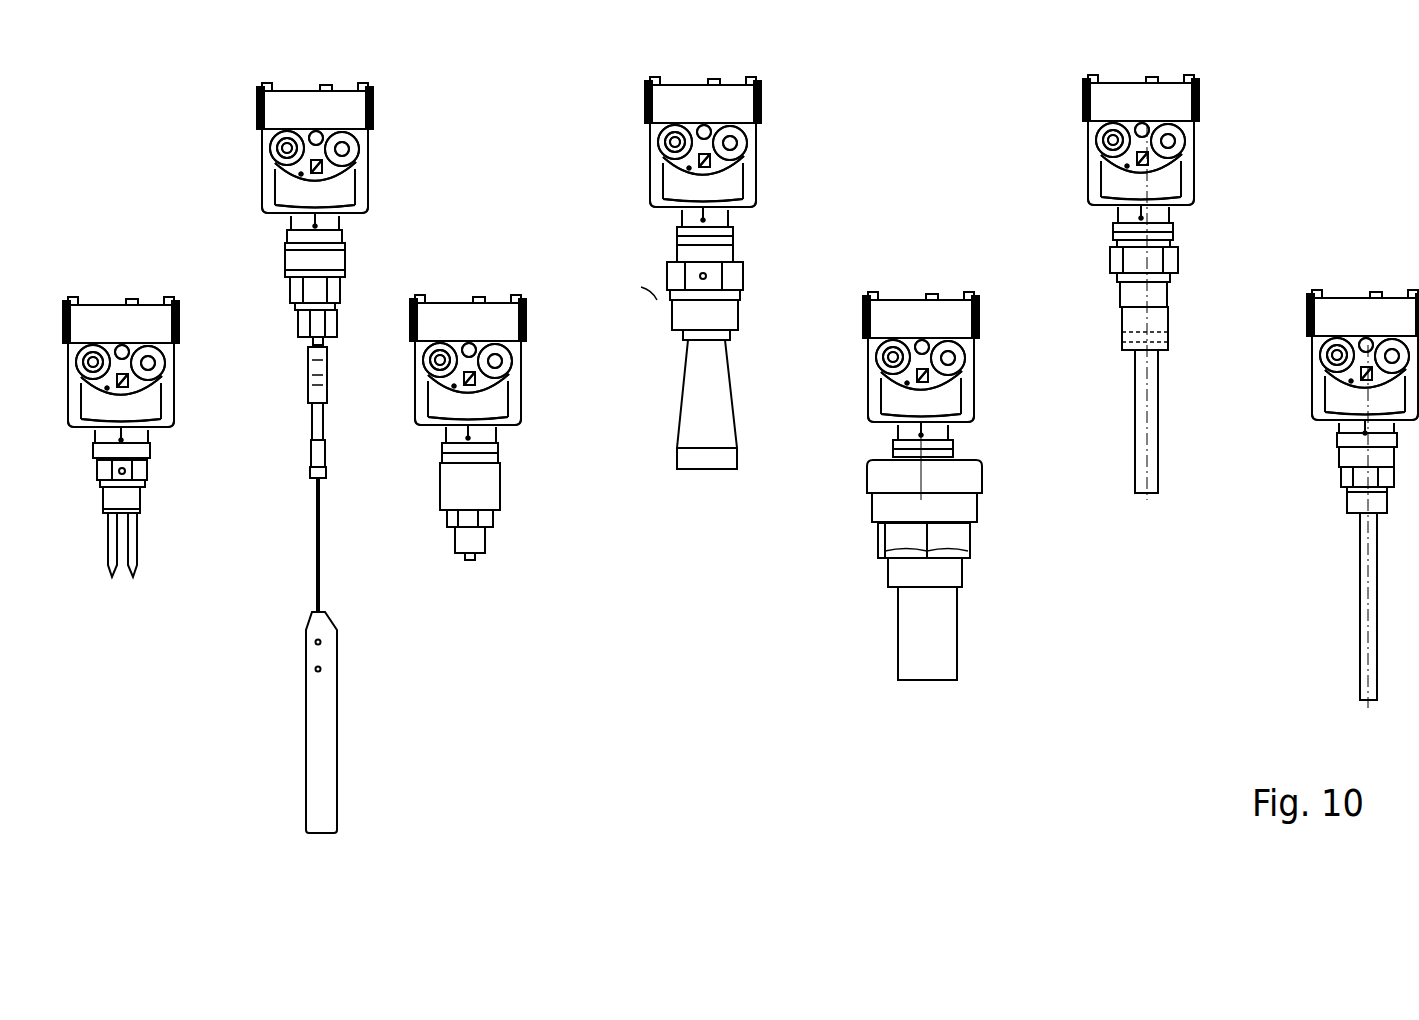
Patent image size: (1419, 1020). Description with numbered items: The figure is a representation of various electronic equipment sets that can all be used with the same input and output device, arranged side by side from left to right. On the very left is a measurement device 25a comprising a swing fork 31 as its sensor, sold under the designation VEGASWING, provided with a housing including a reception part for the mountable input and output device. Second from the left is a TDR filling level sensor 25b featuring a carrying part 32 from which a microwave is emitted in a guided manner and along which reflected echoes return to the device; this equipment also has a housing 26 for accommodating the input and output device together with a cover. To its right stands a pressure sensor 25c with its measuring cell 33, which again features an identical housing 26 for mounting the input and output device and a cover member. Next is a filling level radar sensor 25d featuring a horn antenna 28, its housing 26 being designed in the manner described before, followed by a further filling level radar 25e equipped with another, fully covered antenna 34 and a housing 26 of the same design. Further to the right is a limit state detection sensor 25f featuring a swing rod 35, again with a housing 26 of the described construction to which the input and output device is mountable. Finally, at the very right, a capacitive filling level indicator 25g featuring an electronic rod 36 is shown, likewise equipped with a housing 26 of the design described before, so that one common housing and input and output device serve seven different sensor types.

The field device with vibration limit switch 25a is at (183, 357).
The TDR filling level sensor 25b is at (378, 167).
The pressure sensor 25c is at (530, 370).
The filling level radar sensor 25d is at (763, 153).
The filling level radar 25e is at (920, 297).
The limit state detection sensor 25f is at (1203, 135).
The capacitive filling level indicator 25g is at (1362, 288).
The housing 26 is at (165, 398).
The horn antenna 28 is at (715, 409).
The swing fork 31 is at (130, 498).
The carrying part 32 is at (322, 749).
The pressure measuring cell 33 is at (485, 488).
The antenna 34 is at (943, 648).
The swing rod 35 is at (1152, 482).
The electronic rod 36 is at (1367, 630).